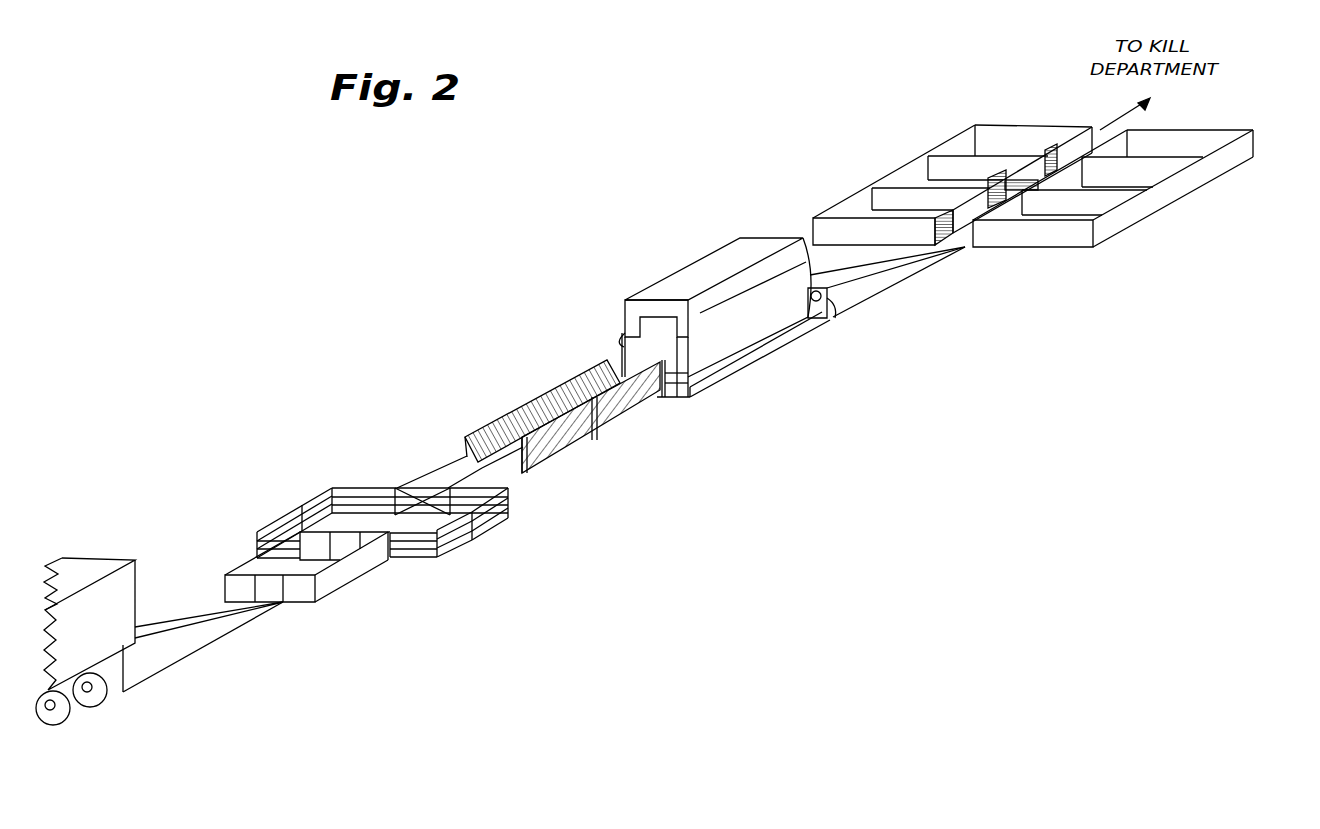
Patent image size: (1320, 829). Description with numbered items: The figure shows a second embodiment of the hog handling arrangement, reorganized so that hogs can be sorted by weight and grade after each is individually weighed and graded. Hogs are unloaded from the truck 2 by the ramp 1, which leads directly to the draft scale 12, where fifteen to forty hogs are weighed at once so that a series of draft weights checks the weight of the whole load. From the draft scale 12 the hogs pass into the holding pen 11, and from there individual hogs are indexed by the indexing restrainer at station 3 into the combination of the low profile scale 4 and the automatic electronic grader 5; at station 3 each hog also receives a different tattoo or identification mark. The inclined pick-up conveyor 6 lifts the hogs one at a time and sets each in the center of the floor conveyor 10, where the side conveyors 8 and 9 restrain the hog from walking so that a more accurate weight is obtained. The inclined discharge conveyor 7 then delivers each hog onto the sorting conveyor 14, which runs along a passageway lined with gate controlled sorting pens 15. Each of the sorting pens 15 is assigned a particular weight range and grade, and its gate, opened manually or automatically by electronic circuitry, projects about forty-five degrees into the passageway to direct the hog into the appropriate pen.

The ramp 1 is at (237, 630).
The truck 2 is at (128, 647).
The indexing restrainer and tattoo station 3 is at (540, 450).
The scale 4 is at (727, 382).
The grader 5 is at (773, 330).
The pick-up conveyor 6 is at (607, 422).
The discharge conveyor 7 is at (880, 272).
The side conveyor 8 is at (680, 399).
The side conveyor 9 is at (620, 346).
The floor conveyor 10 is at (830, 301).
The holding pen 11 is at (477, 528).
The draft scale 12 is at (352, 583).
The sorting conveyor 14 is at (957, 245).
The sorting pens 15 is at (898, 168).